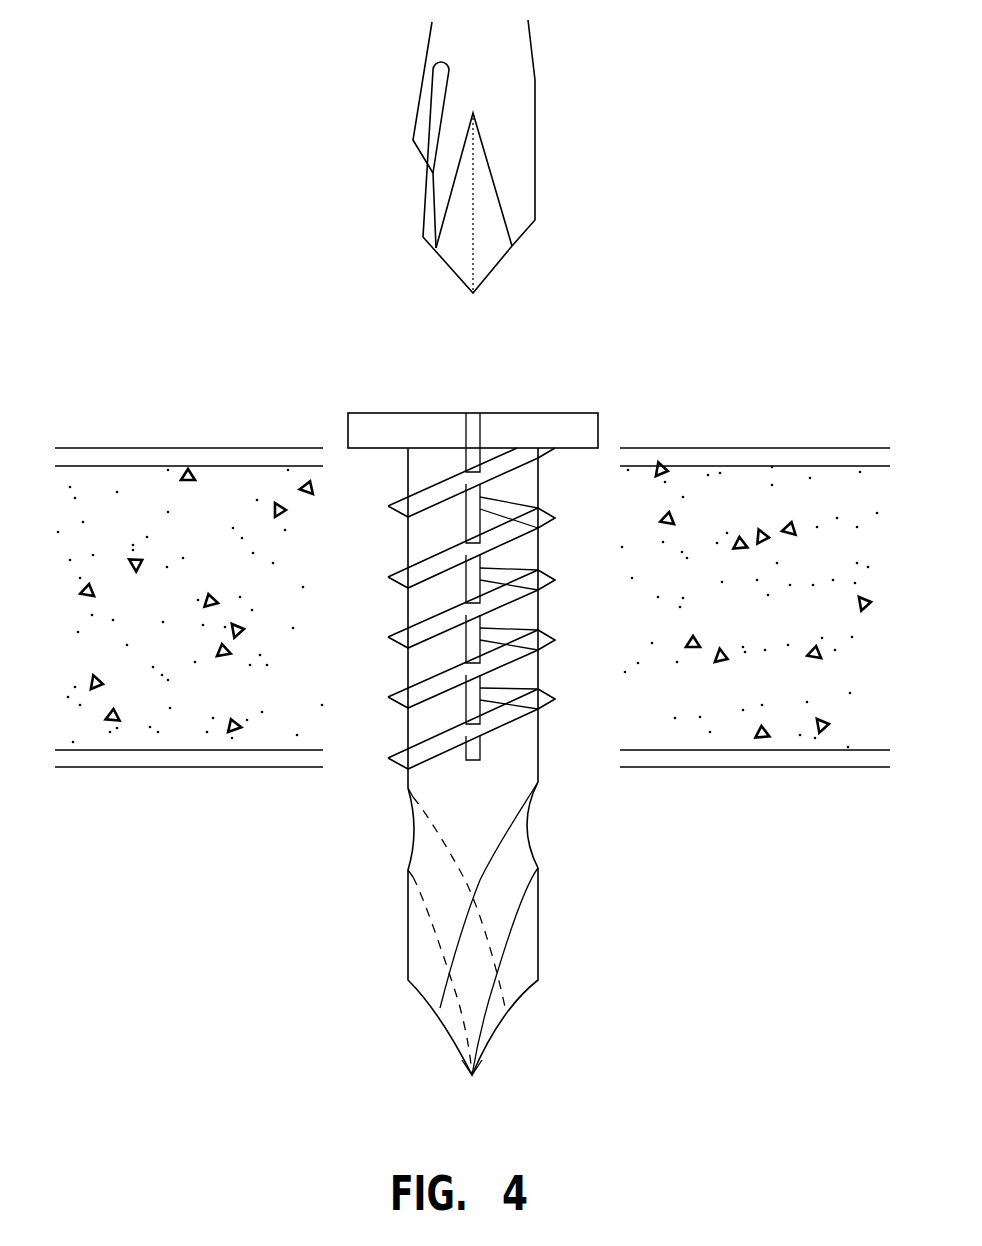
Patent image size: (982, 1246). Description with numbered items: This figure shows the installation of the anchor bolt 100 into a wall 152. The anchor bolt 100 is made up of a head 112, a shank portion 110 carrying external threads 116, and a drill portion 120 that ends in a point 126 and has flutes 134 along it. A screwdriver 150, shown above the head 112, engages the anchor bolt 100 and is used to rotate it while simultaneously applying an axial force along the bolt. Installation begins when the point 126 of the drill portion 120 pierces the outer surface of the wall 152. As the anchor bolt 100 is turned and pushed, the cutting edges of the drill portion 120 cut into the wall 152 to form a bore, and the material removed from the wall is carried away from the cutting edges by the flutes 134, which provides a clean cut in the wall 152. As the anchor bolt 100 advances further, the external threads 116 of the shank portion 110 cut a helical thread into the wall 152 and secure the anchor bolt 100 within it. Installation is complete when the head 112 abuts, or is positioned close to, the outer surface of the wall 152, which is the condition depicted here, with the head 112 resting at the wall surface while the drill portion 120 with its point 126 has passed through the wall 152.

The anchor bolt 100 is at (337, 382).
The shank portion 110 is at (540, 548).
The head 112 is at (567, 413).
The external threads 116 is at (620, 595).
The drill portion 120 is at (513, 953).
The point 126 is at (472, 1077).
The flutes 134 is at (503, 875).
The screwdriver 150 is at (536, 150).
The wall 152 is at (143, 740).